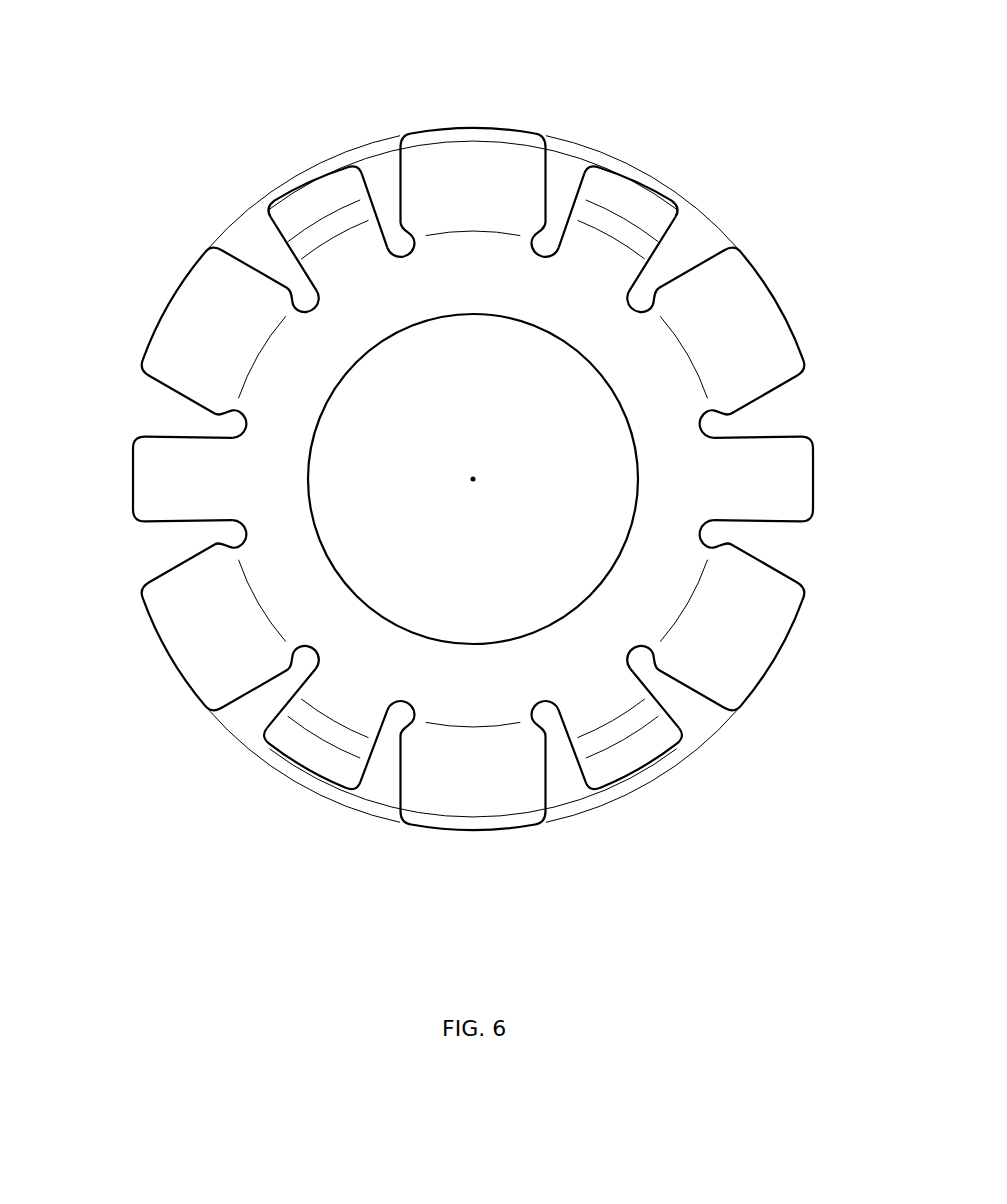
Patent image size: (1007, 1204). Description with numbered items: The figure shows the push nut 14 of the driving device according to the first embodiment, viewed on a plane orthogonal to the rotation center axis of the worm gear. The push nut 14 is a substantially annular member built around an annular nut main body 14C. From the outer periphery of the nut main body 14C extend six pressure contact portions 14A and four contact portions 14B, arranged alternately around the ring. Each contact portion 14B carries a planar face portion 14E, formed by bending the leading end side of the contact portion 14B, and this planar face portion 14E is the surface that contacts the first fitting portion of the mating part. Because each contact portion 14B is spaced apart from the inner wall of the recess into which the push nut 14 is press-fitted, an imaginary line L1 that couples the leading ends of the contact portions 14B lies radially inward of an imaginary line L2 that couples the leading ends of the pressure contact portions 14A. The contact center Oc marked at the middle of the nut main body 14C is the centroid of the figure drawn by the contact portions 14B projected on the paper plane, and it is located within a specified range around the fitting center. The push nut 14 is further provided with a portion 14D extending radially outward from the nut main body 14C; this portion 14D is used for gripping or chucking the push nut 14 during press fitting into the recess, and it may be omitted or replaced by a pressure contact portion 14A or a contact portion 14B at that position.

The push nut 14 is at (200, 136).
The pressure contact portion 14A is at (473, 128).
The contact portion 14B is at (305, 187).
The nut main body 14C is at (312, 471).
The portion 14D is at (140, 476).
The planar face portion 14E is at (291, 226).
The imaginary line L1 is at (372, 148).
The imaginary line L2 is at (590, 143).
The contact center Oc is at (491, 471).